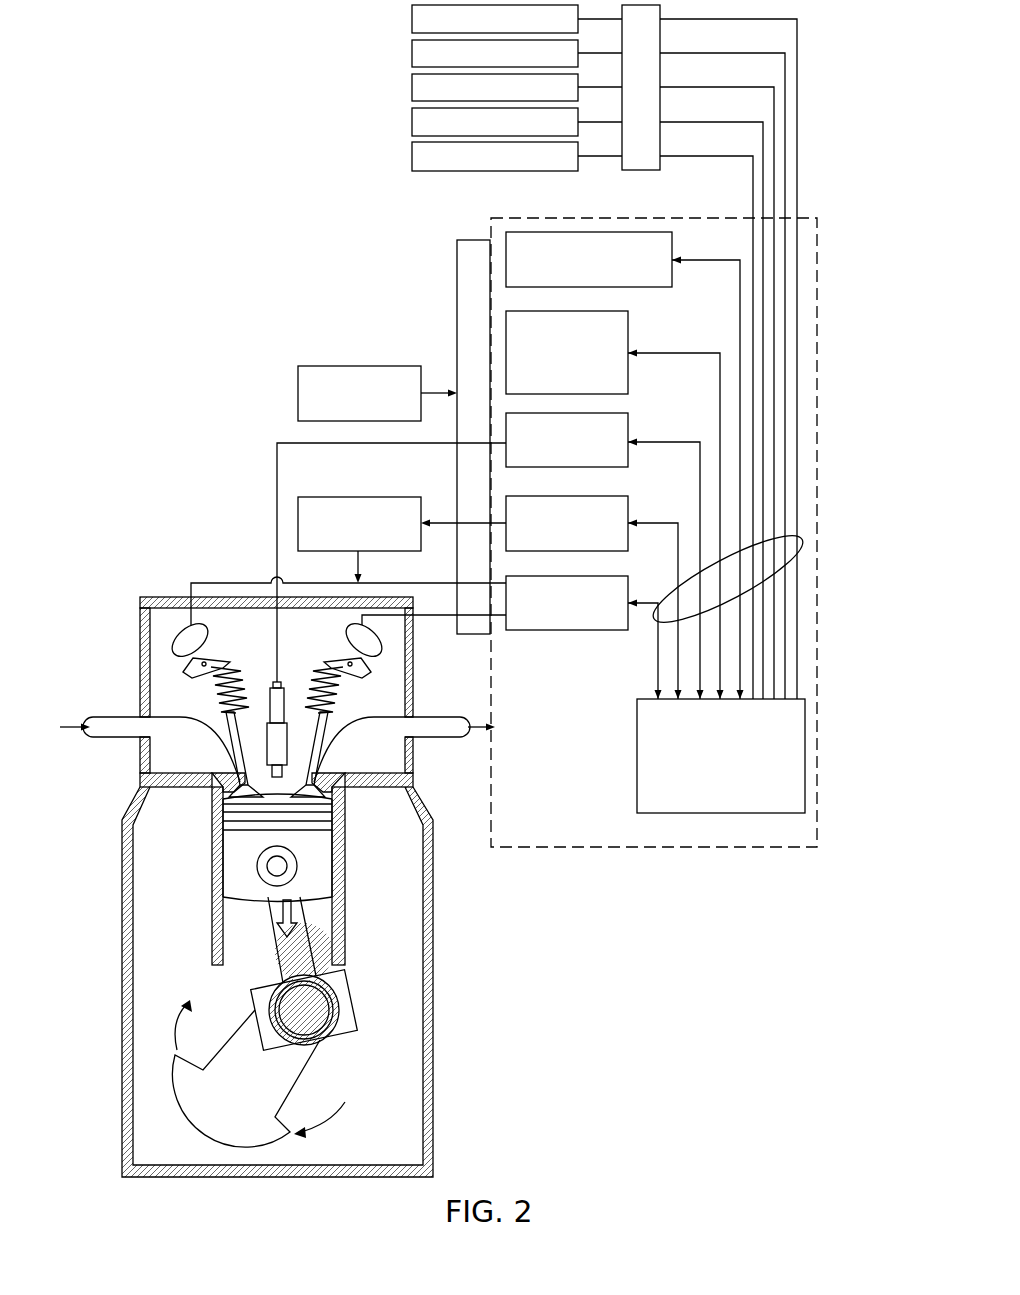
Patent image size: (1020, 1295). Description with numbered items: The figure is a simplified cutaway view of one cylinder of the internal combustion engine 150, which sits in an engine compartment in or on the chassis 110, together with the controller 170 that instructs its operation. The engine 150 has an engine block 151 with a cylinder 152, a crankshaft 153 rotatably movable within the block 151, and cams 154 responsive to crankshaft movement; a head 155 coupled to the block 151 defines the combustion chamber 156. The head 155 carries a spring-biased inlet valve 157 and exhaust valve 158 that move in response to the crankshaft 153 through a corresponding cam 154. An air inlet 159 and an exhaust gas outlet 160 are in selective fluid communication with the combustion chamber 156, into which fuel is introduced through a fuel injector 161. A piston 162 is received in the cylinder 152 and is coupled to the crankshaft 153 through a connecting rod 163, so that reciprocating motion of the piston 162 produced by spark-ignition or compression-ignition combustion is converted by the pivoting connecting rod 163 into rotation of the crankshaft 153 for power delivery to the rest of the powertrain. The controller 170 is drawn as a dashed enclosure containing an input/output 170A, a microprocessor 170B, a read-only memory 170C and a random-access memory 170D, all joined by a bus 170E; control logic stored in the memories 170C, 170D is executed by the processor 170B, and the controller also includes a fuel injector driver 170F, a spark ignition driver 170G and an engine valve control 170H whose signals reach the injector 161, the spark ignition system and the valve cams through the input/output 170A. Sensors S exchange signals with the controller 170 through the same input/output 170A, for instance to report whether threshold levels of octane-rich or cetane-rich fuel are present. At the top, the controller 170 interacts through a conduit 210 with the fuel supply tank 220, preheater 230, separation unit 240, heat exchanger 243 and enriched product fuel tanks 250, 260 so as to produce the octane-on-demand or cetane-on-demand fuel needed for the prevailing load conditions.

The preheater 230 is at (412, 20).
The enriched product fuel tank 250 is at (454, 60).
The enriched product fuel tank 260 is at (412, 54).
The fuel supply tank 220 is at (412, 88).
The heat exchanger 243 is at (412, 123).
The separation unit 240 is at (412, 157).
The conduit 210 is at (622, 171).
The controller 170 is at (684, 218).
The input/output 170A is at (474, 240).
The microprocessor 170B is at (637, 757).
The read-only memory 170C is at (672, 254).
The random-access memory 170D is at (628, 328).
The bus 170E is at (802, 541).
The fuel injector driver 170F is at (628, 431).
The spark ignition driver 170G is at (628, 511).
The engine valve control 170H is at (570, 630).
The sensors S is at (358, 366).
The chassis 110 is at (358, 497).
The internal combustion engine 150 is at (271, 864).
The engine block 151 is at (433, 1120).
The cylinder 152 is at (212, 829).
The crankshaft 153 is at (303, 1068).
The cam 154 is at (175, 645).
The head 155 is at (150, 597).
The combustion chamber 156 is at (318, 798).
The inlet valve 157 is at (232, 664).
The exhaust valve 158 is at (322, 664).
The air inlet 159 is at (110, 740).
The exhaust gas outlet 160 is at (440, 740).
The fuel injector 161 is at (270, 705).
The piston 162 is at (318, 868).
The connecting rod 163 is at (310, 956).